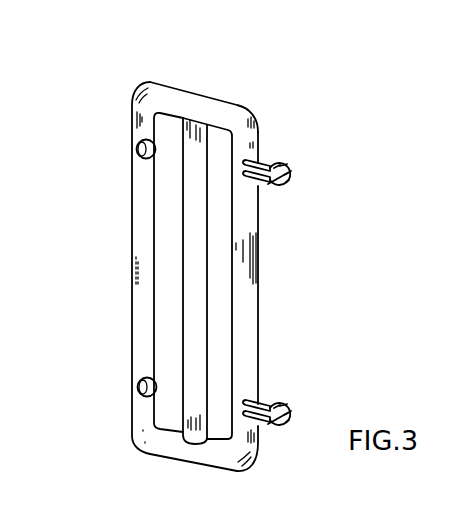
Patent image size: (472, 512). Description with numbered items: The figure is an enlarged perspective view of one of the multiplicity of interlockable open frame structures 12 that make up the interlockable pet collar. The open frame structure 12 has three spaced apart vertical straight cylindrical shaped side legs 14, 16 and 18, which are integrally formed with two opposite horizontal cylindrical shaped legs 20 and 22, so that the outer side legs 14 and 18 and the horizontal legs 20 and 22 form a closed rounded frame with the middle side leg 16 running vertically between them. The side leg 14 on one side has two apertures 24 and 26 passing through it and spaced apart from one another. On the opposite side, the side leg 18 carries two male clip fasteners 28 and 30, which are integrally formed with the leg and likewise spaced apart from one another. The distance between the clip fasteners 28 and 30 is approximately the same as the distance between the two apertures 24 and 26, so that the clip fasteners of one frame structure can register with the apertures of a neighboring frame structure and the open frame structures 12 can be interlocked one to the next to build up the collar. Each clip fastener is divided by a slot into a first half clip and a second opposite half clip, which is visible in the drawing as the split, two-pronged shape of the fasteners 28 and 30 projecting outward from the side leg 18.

The interlockable open frame structure 12 is at (289, 113).
The side leg 14 is at (138, 197).
The side leg 16 is at (193, 260).
The side leg 18 is at (250, 303).
The horizontal leg 20 is at (197, 105).
The horizontal leg 22 is at (180, 452).
The aperture 24 is at (137, 151).
The aperture 26 is at (138, 389).
The male clip fastener 28 is at (285, 165).
The male clip fastener 30 is at (287, 401).